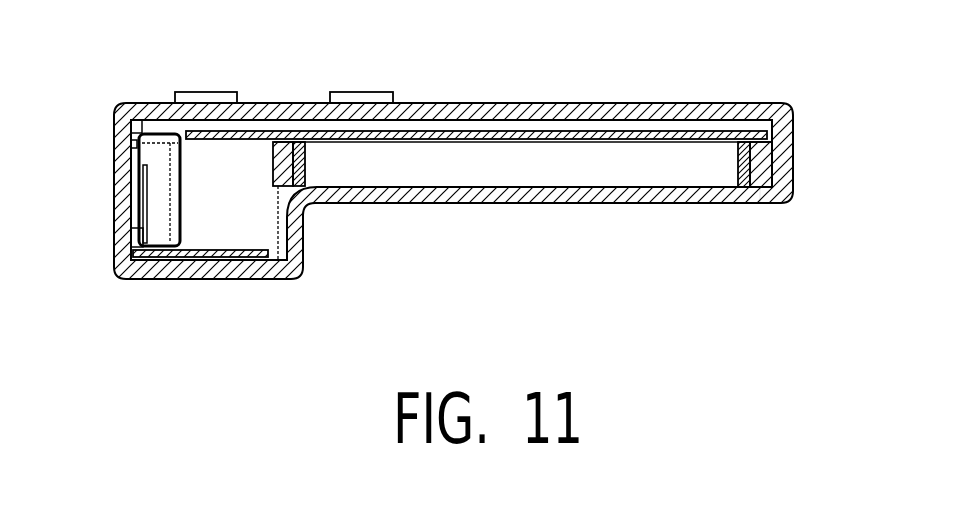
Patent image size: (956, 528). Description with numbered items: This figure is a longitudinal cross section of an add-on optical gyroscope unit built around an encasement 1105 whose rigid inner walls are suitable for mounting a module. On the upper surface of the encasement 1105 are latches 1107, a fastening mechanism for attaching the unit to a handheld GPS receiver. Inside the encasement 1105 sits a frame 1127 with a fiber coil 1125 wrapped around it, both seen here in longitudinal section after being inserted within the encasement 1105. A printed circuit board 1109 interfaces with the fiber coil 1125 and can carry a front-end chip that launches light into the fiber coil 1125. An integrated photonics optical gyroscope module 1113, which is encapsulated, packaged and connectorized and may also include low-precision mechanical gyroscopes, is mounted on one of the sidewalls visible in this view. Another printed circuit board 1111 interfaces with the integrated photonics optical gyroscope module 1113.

The encasement 1105 is at (690, 103).
The latches 1107 is at (205, 92).
The printed circuit board 1109 is at (542, 135).
The printed circuit board 1111 is at (223, 252).
The integrated photonics optical gyroscope module 1113 is at (160, 215).
The fiber coil 1125 is at (302, 213).
The frame 1127 is at (292, 186).